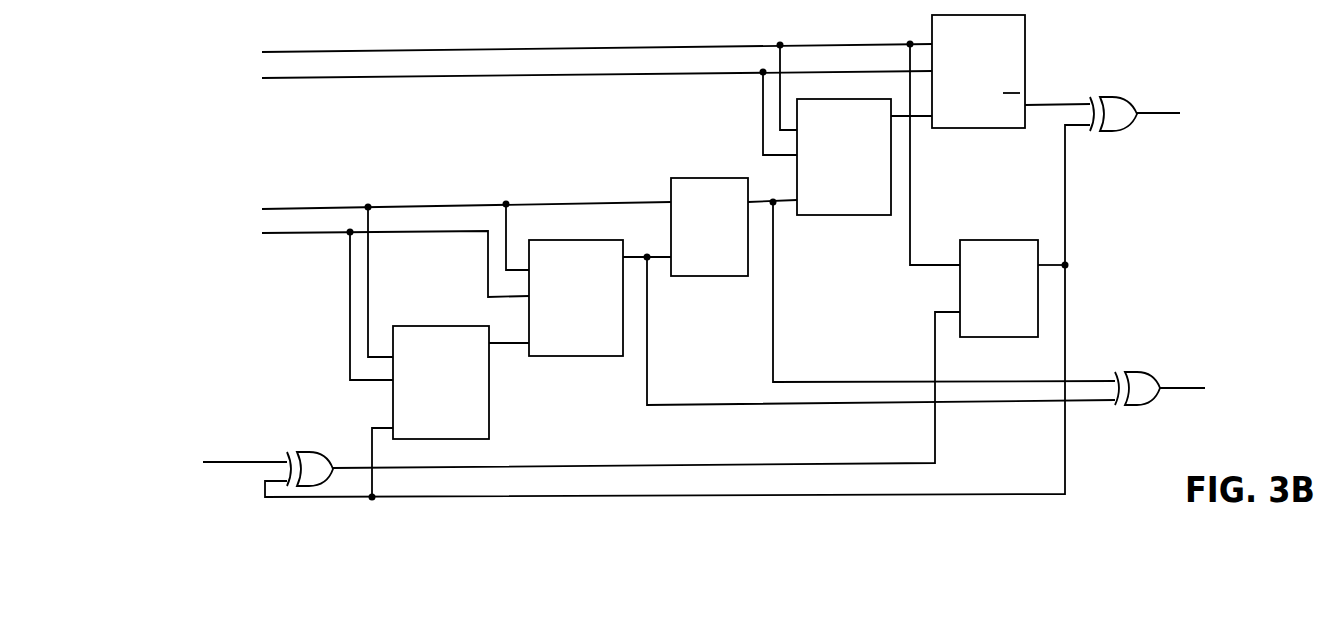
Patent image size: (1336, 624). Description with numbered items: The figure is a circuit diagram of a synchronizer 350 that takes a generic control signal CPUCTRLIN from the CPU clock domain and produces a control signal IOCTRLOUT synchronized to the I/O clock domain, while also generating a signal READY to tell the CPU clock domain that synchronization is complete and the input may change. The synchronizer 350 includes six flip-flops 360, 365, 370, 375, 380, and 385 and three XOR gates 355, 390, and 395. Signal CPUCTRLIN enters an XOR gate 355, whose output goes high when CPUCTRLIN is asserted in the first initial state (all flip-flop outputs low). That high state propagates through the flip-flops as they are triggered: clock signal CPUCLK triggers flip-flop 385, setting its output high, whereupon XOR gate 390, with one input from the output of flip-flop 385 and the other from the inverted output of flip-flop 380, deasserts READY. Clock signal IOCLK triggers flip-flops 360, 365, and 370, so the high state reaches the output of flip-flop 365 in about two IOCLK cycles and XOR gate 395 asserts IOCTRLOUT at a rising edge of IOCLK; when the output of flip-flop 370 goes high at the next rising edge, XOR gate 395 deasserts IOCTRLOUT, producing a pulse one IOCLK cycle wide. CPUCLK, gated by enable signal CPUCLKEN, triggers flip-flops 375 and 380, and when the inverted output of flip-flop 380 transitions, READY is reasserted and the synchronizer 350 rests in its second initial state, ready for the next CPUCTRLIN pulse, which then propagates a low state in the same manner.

The synchronizer 350 is at (203, 56).
The XOR gate 355 is at (316, 452).
The flip-flop 360 is at (437, 328).
The flip-flop 365 is at (584, 354).
The flip-flop 370 is at (731, 277).
The flip-flop 375 is at (853, 215).
The flip-flop 380 is at (971, 128).
The flip-flop 385 is at (1002, 240).
The XOR gate 390 is at (1118, 100).
The XOR gate 395 is at (1130, 375).